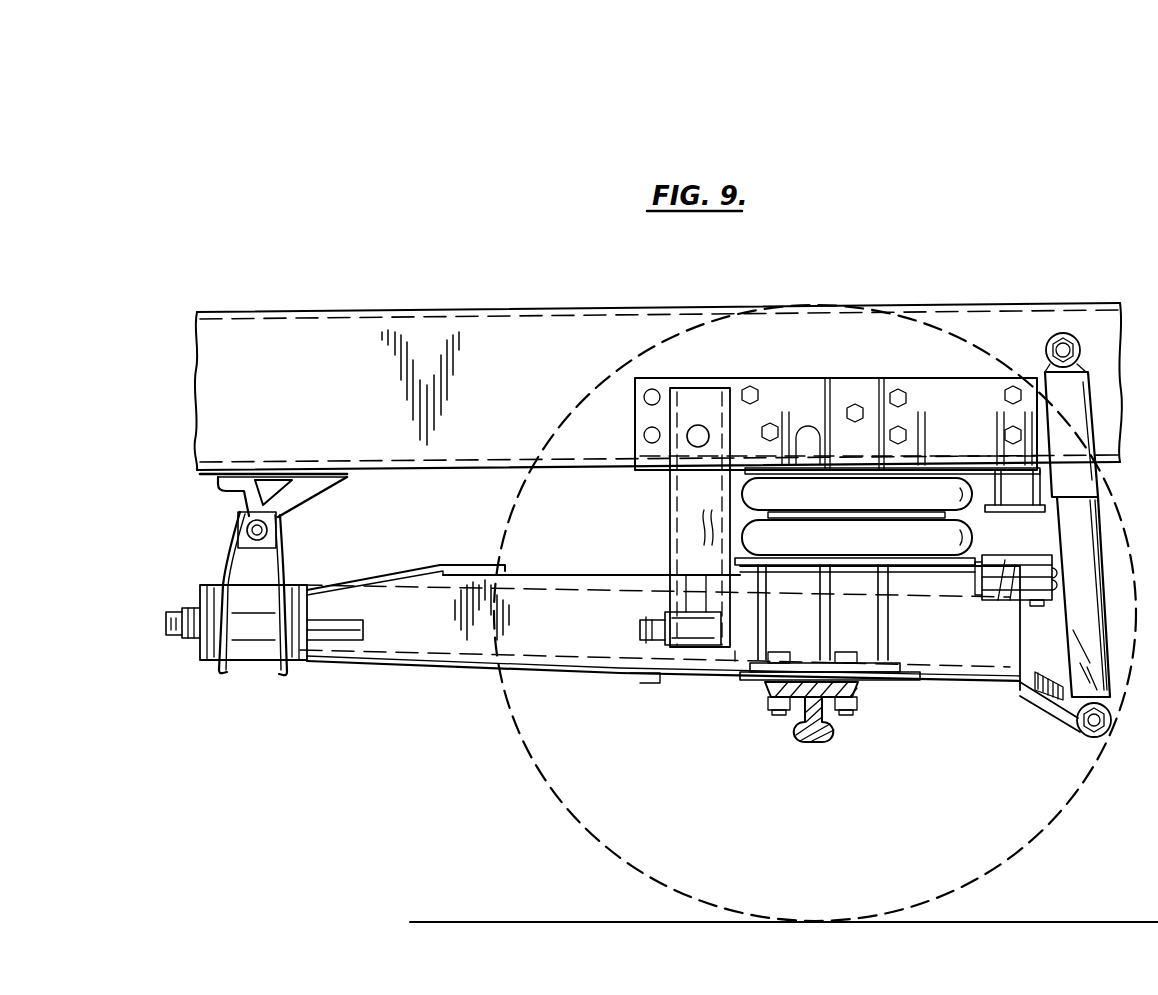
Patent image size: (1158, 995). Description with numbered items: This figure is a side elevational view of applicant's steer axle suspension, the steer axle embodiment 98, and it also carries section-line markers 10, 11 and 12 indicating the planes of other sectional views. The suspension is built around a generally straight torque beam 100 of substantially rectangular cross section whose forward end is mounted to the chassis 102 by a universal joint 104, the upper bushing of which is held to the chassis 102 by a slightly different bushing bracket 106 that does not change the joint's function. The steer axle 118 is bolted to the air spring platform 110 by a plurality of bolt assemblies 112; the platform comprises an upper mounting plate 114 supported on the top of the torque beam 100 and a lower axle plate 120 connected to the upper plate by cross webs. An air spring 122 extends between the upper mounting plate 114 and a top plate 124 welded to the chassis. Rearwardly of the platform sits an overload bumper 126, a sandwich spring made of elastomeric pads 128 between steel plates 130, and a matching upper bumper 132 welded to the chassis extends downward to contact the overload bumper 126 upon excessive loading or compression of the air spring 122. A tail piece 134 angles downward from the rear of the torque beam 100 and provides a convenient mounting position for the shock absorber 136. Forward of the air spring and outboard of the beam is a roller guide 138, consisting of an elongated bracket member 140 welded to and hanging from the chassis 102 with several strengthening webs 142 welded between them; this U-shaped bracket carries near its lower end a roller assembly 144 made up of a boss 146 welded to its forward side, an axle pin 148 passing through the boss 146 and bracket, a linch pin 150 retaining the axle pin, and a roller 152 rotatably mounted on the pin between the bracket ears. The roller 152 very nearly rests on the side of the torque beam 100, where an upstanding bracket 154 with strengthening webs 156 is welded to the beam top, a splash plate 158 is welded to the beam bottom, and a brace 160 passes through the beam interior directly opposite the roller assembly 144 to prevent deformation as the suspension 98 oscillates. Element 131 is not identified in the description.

The steer axle embodiment 98 is at (470, 722).
The torque beam 100 is at (414, 648).
The chassis 102 is at (510, 325).
The universal joint 104 is at (216, 550).
The bushing bracket 106 is at (296, 496).
The air spring platform 110 is at (908, 586).
The bolt assemblies 112 is at (775, 716).
The upper mounting plate 114 is at (955, 591).
The steer axle 118 is at (812, 743).
The lower axle plate 120 is at (866, 689).
The air spring 122 is at (965, 546).
The top plate 124 is at (950, 470).
The overload bumper 126 is at (1046, 560).
The elastomeric pads 128 is at (1005, 601).
The steel plates 130 is at (1100, 505).
The shock absorber housing 131 is at (1095, 643).
The upper bumper 132 is at (1062, 530).
The tail piece 134 is at (1030, 702).
The shock absorber 136 is at (1047, 577).
The roller guide 138 is at (660, 541).
The elongated bracket member 140 is at (668, 513).
The strengthening webs 142 is at (668, 481).
The roller assembly 144 is at (672, 661).
The boss 146 is at (648, 613).
The axle pin 148 is at (642, 629).
The linch pin 150 is at (622, 666).
The roller 152 is at (690, 601).
The upstanding bracket 154 is at (742, 541).
The strengthening webs 156 is at (705, 513).
The splash plate 158 is at (682, 673).
The brace 160 is at (700, 637).
The section line 10- 10 is at (1145, 320).
The section line 11- 11 is at (970, 330).
The section line 12- 12 is at (738, 340).